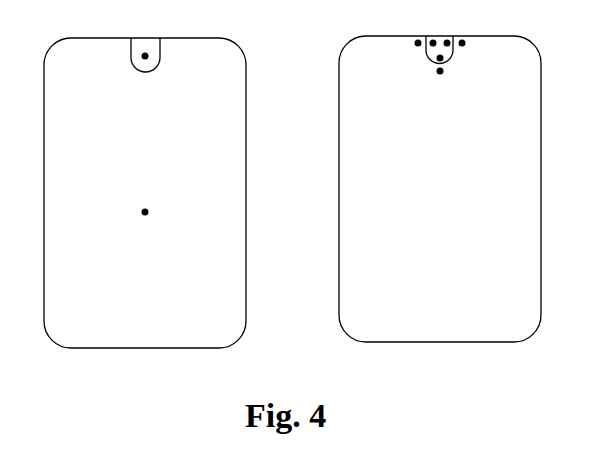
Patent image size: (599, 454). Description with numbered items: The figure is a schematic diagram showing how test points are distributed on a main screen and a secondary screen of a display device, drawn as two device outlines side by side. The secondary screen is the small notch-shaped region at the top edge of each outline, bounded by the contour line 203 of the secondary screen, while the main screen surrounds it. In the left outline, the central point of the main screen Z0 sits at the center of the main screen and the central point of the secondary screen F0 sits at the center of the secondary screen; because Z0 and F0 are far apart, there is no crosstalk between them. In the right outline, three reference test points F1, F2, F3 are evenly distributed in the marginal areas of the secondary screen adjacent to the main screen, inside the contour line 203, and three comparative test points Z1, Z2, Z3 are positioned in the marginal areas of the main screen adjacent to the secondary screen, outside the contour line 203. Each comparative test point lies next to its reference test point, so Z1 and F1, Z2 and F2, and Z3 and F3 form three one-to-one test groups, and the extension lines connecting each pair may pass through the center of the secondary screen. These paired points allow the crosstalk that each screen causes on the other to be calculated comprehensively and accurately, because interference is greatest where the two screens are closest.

The contour line of the secondary screen 203 is at (148, 72).
The central point of the secondary screen F0 is at (149, 56).
The central point of the main screen Z0 is at (149, 212).
The comparative test point Z1 is at (414, 43).
The comparative test point Z2 is at (466, 43).
The comparative test point Z3 is at (444, 72).
The reference test point F1 is at (434, 40).
The reference test point F2 is at (448, 40).
The reference test point F3 is at (444, 58).